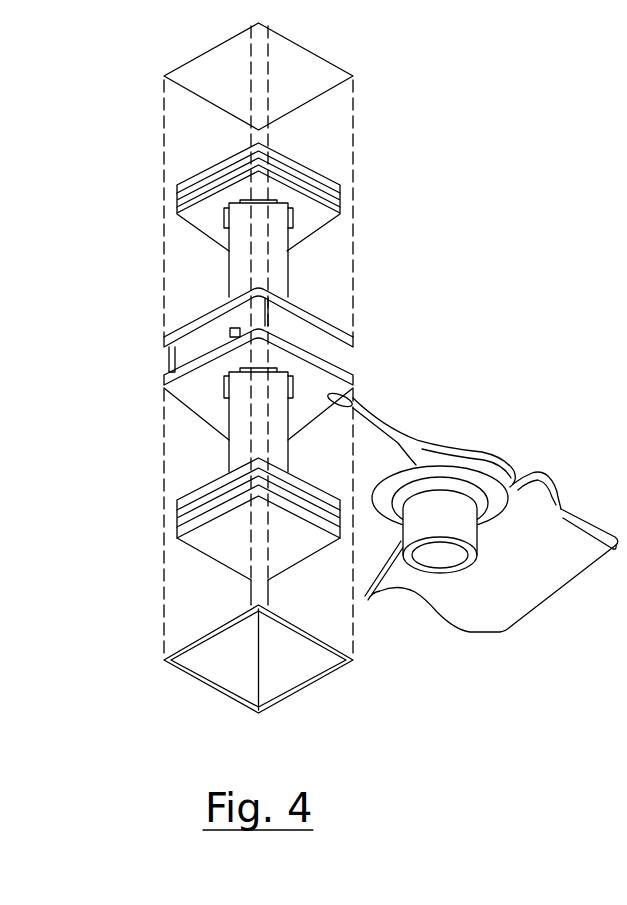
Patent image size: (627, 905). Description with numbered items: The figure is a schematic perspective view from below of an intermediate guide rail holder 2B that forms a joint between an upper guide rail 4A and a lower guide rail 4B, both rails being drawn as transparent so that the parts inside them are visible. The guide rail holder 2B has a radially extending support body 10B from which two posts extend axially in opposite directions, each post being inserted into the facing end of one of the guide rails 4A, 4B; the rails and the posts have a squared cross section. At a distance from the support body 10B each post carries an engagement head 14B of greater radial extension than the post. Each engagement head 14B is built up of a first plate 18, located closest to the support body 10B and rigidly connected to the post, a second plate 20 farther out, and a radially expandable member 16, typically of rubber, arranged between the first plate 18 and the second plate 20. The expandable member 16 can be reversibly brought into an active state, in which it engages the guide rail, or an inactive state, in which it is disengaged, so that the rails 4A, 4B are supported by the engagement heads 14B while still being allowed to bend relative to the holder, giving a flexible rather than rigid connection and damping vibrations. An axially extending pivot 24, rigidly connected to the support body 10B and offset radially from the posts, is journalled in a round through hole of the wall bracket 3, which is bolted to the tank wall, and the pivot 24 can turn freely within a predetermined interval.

The upper guide rail 4A is at (333, 118).
The lower guide rail 4B is at (337, 608).
The second plate 20 is at (185, 185).
The expandable member 16 is at (182, 202).
The first plate 18 is at (183, 225).
The engagement head 14B is at (357, 208).
The intermediate guide rail holder 2B is at (150, 366).
The support body 10B is at (373, 448).
The wall bracket 3 is at (537, 510).
The pivot 24 is at (455, 522).